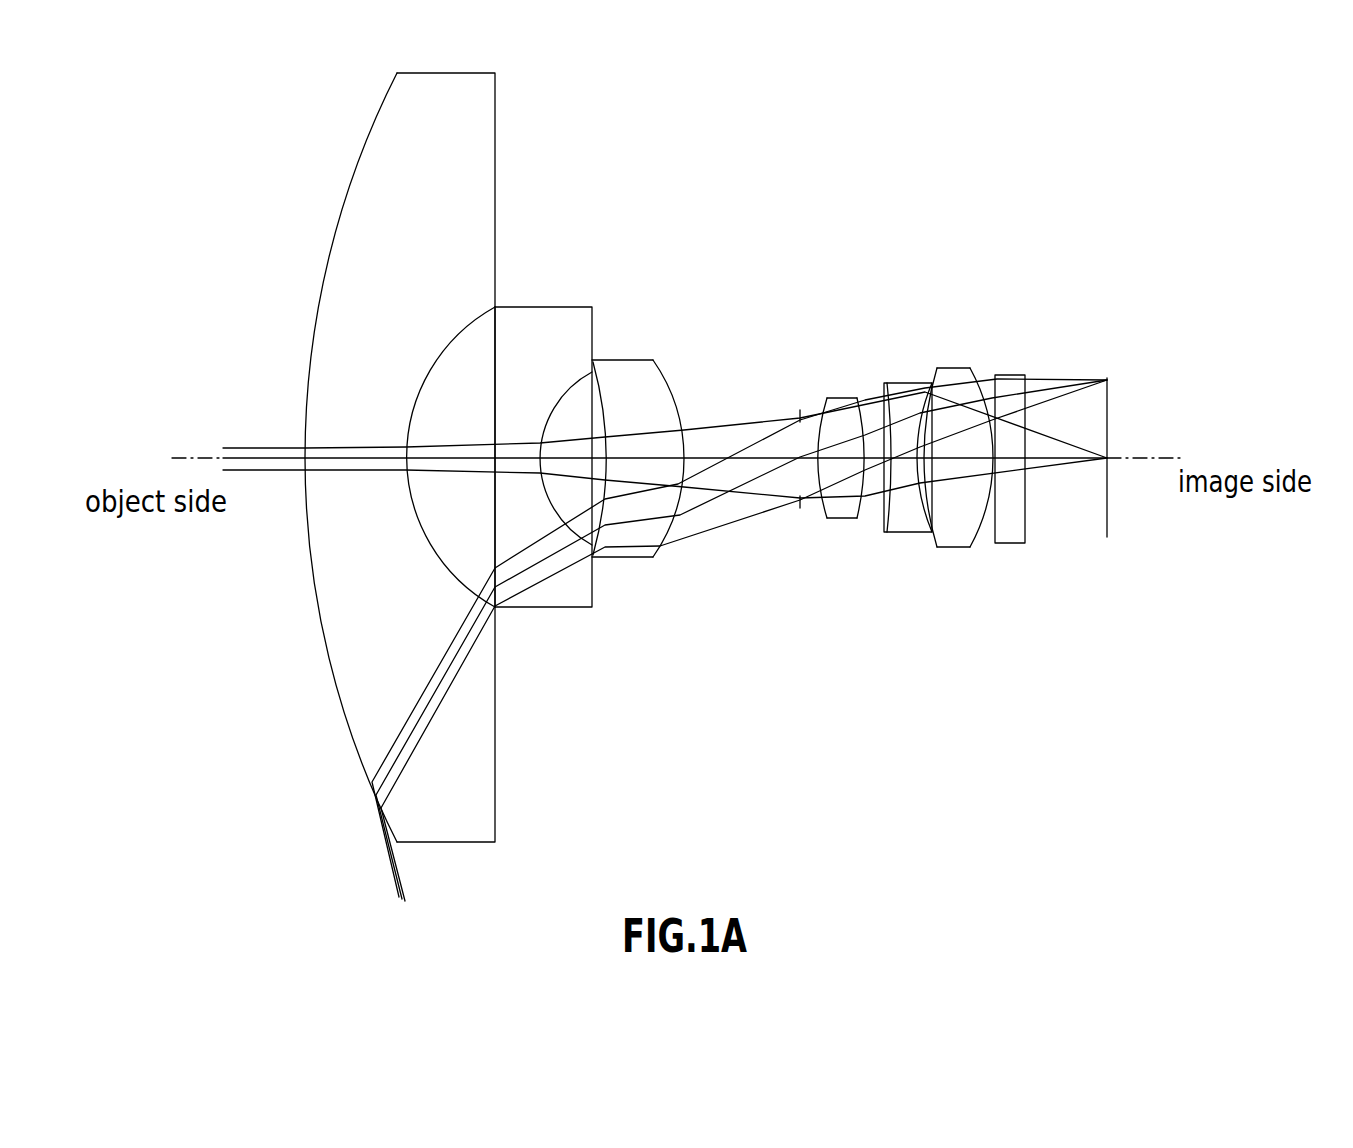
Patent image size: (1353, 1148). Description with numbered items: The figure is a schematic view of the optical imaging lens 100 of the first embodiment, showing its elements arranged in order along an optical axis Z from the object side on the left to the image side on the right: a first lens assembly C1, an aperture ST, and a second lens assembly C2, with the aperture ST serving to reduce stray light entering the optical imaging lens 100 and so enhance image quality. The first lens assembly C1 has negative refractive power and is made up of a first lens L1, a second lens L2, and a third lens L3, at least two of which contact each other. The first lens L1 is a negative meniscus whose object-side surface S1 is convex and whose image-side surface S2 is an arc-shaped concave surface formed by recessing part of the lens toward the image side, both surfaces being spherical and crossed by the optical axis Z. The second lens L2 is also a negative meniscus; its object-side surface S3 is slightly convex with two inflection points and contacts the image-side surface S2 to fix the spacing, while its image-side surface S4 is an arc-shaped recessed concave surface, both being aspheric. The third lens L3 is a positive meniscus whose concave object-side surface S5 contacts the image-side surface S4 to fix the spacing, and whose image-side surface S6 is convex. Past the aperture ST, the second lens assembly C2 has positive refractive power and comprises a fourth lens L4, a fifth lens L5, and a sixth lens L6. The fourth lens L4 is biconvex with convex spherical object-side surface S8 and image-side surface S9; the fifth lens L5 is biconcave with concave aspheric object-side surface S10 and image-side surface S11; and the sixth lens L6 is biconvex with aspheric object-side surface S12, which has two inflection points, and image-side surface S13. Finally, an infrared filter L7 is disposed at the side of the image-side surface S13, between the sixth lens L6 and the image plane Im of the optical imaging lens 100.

The optical imaging lens 100 is at (260, 345).
The first lens assembly C1 is at (605, 174).
The second lens assembly C2 is at (842, 271).
The first lens L1 is at (377, 447).
The second lens L2 is at (558, 464).
The third lens L3 is at (652, 387).
The fourth lens L4 is at (826, 482).
The fifth lens L5 is at (924, 483).
The sixth lens L6 is at (994, 439).
The infrared filter L7 is at (1018, 500).
The object-side surface of the first lens S1 is at (303, 518).
The image-side surface of the first lens S2 is at (495, 303).
The object-side surface of the second lens S3 is at (497, 555).
The image-side surface of the second lens S4 is at (597, 545).
The object-side surface of the third lens S5 is at (600, 403).
The image-side surface of the third lens S6 is at (677, 402).
The aperture ST is at (791, 387).
The object-side surface of the fourth lens S8 is at (822, 503).
The image-side surface of the fourth lens S9 is at (884, 492).
The object-side surface of the fifth lens S10 is at (880, 503).
The image-side surface of the fifth lens S11 is at (935, 497).
The object-side surface of the sixth lens S12 is at (938, 368).
The image-side surface of the sixth lens S13 is at (1003, 405).
The image plane Im is at (1110, 428).
The optical axis Z is at (659, 460).